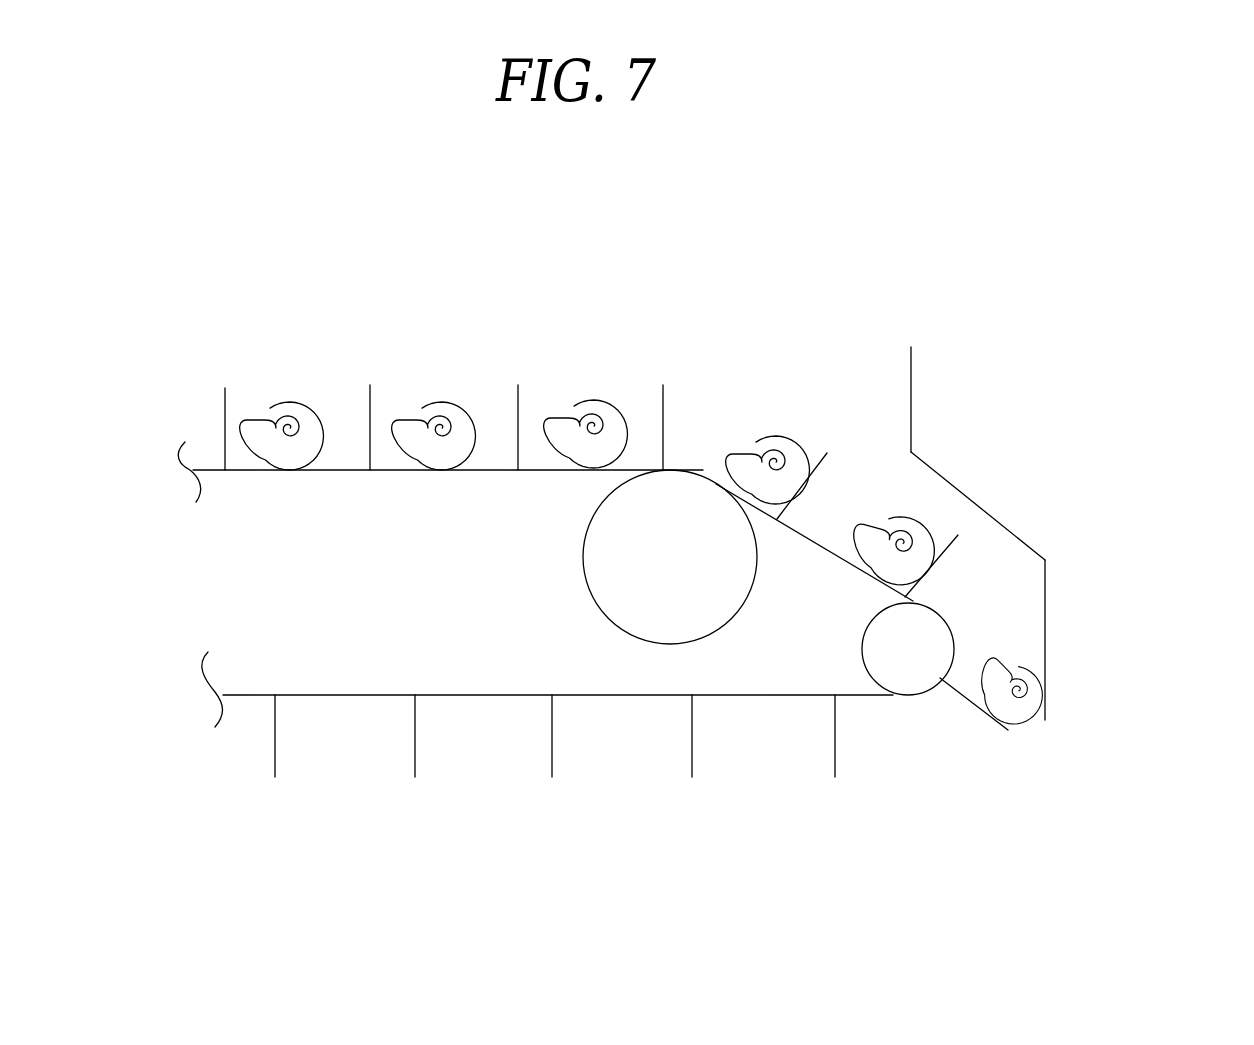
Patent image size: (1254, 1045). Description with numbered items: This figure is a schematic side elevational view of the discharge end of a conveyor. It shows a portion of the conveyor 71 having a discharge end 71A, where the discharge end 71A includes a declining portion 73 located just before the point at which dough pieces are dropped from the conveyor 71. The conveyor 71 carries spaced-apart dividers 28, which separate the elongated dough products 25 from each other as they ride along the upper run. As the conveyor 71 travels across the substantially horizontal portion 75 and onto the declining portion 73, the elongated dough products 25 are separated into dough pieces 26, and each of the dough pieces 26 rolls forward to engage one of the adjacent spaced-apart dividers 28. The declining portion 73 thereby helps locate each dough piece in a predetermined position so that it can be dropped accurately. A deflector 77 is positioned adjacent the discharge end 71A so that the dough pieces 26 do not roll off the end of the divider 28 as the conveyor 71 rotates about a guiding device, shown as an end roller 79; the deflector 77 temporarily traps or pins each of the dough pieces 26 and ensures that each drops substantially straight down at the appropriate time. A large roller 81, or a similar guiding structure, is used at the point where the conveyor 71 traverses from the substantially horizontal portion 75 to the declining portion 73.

The elongated dough products 25 is at (292, 402).
The dough pieces 26 is at (778, 435).
The spaced-apart dividers 28 is at (218, 408).
The conveyor 71 is at (350, 470).
The discharge end 71A is at (1048, 778).
The declining portion 73 is at (996, 471).
The substantially horizontal portion 75 is at (450, 513).
The deflector 77 is at (1007, 525).
The end roller 79 is at (862, 650).
The large roller 81 is at (607, 622).